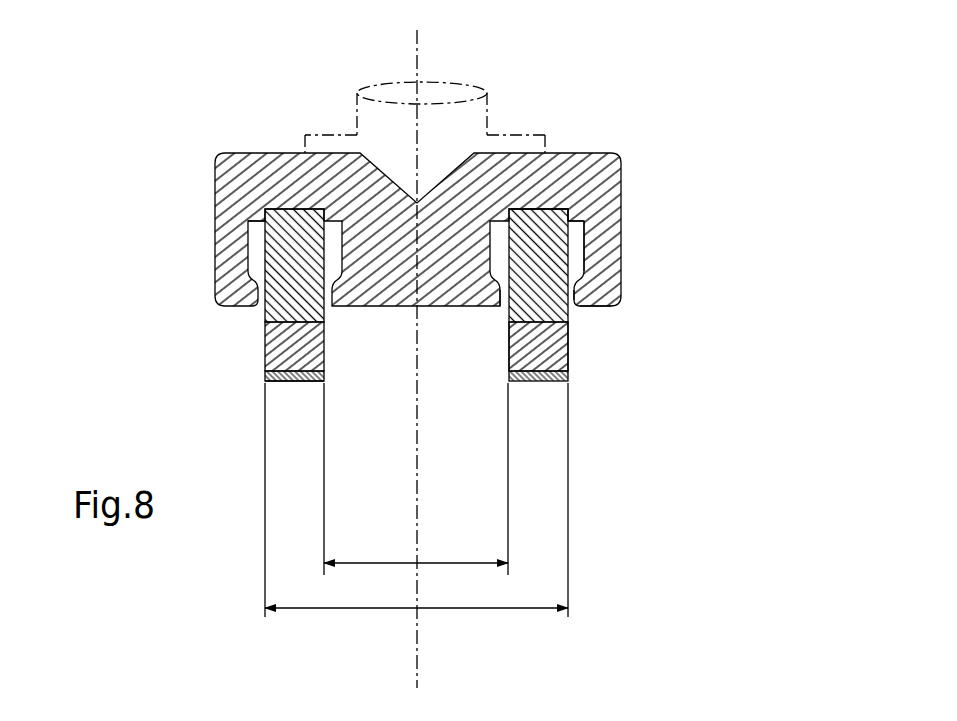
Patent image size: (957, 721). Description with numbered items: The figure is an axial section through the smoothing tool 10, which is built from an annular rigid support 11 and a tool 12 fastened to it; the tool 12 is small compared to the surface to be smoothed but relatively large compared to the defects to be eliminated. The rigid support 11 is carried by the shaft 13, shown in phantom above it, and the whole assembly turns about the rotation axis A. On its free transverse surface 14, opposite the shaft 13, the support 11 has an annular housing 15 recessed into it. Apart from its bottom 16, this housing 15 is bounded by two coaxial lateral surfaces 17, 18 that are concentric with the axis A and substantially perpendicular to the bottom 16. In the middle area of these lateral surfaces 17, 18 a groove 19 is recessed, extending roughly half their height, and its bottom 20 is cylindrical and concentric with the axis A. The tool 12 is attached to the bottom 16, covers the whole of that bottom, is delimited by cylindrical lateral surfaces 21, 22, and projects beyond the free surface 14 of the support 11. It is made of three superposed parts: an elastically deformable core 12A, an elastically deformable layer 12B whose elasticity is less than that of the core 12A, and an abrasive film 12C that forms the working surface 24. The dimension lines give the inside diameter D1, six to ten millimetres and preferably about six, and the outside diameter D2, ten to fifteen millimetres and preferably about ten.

The smoothing tool 10 is at (690, 114).
The annular rigid support 11 is at (648, 315).
The tool 12 is at (386, 361).
The elastically deformable core 12A is at (255, 261).
The elastically deformable layer 12B is at (281, 345).
The abrasive film 12C is at (270, 378).
The shaft 13 is at (472, 74).
The transverse surface 14 is at (606, 311).
The annular housing 15 is at (586, 224).
The bottom 16 is at (257, 217).
The lateral surface 17 is at (514, 303).
The lateral surface 18 is at (561, 305).
The groove 19 is at (535, 193).
The bottom of the groove 20 is at (573, 184).
The cylindrical lateral surface 21 is at (507, 366).
The cylindrical lateral surface 22 is at (570, 368).
The working surface 24 is at (301, 383).
The rotation axis A is at (418, 38).
The inside diameter D1 is at (441, 560).
The outside diameter D2 is at (487, 610).